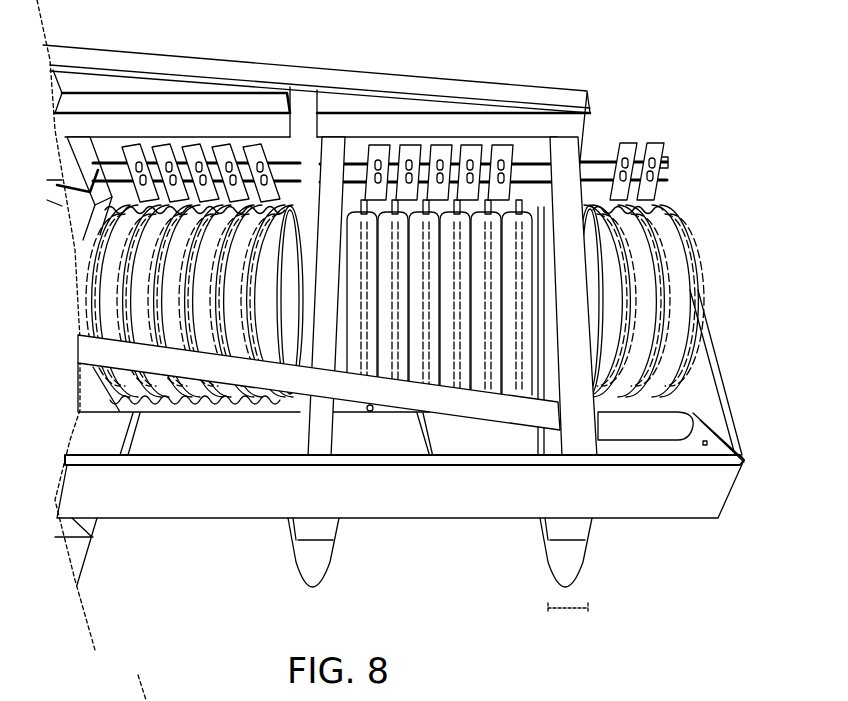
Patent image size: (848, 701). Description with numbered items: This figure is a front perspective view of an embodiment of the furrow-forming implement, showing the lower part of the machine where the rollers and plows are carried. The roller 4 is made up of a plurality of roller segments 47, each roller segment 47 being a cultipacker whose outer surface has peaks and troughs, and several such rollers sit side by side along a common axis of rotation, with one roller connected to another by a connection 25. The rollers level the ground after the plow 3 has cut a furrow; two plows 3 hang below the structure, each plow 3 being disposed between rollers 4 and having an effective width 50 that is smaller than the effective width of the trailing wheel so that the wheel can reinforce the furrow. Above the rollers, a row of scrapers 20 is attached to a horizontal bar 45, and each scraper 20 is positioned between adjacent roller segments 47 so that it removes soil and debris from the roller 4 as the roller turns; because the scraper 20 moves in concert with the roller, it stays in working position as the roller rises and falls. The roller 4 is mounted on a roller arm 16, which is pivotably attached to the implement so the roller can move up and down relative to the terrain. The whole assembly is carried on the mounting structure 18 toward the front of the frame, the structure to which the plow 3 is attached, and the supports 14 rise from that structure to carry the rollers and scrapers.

The plow 3 is at (332, 582).
The roller 4 is at (668, 299).
The support posts 14 is at (291, 404).
The roller arm 16 is at (708, 362).
The mounting structure 18 is at (770, 465).
The scraper 20 is at (622, 146).
The connection 25 is at (543, 294).
The horizontal bar 45 is at (670, 166).
The roller segment 47 is at (652, 238).
The effective width 50 is at (572, 612).